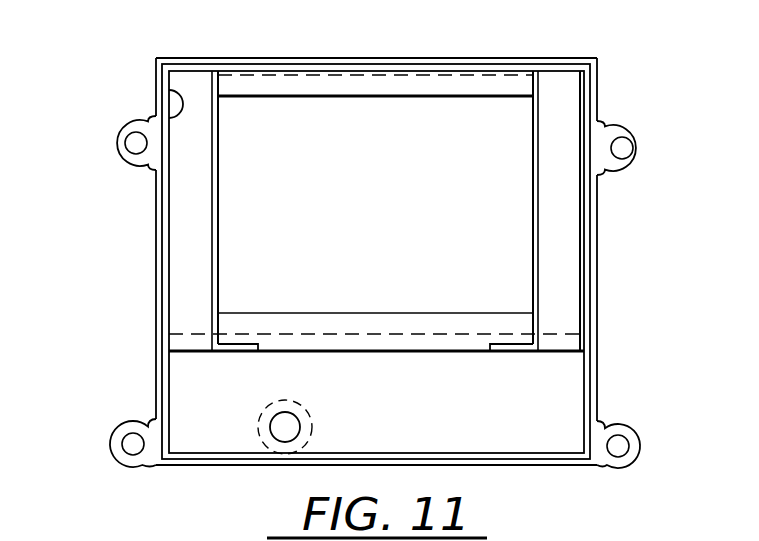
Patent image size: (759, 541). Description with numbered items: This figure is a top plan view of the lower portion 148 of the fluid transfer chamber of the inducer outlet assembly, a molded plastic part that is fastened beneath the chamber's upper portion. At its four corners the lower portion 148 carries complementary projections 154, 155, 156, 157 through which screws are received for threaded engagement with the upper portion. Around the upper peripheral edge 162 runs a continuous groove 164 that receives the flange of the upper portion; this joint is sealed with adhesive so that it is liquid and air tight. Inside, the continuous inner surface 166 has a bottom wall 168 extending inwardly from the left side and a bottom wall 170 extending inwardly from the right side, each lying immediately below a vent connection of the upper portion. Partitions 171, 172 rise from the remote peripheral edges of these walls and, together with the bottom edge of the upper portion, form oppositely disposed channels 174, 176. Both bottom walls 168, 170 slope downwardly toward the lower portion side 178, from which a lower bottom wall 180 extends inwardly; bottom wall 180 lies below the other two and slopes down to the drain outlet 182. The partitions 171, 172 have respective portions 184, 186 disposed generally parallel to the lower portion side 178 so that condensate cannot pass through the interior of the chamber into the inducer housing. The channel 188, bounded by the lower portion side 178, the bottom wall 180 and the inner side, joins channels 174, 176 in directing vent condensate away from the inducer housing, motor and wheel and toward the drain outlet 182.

The lower portion 148 is at (600, 236).
The projection 154 is at (141, 417).
The projection 155 is at (140, 170).
The projection 156 is at (630, 427).
The projection 157 is at (642, 136).
The upper peripheral edge 162 is at (548, 58).
The continuous groove 164 is at (548, 58).
The inner surface 166 is at (178, 94).
The bottom wall 168 is at (195, 200).
The bottom wall 170 is at (552, 208).
The partition 171 is at (219, 142).
The partition 172 is at (532, 152).
The channel 174 is at (195, 237).
The channel 176 is at (552, 248).
The lower portion side 178 is at (385, 450).
The bottom wall 180 is at (376, 368).
The drain outlet 182 is at (280, 424).
The partition portion 184 is at (242, 342).
The partition portion 186 is at (507, 345).
The channel 188 is at (557, 425).